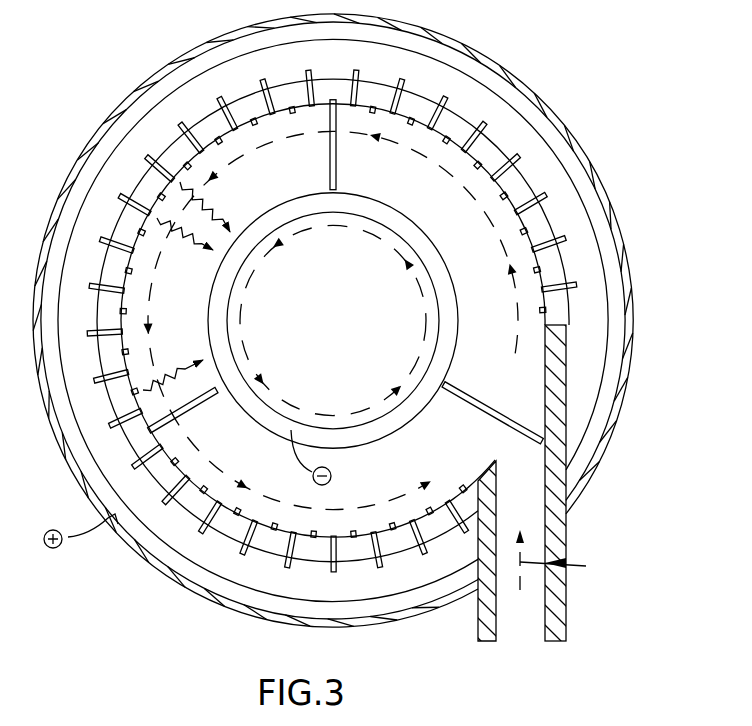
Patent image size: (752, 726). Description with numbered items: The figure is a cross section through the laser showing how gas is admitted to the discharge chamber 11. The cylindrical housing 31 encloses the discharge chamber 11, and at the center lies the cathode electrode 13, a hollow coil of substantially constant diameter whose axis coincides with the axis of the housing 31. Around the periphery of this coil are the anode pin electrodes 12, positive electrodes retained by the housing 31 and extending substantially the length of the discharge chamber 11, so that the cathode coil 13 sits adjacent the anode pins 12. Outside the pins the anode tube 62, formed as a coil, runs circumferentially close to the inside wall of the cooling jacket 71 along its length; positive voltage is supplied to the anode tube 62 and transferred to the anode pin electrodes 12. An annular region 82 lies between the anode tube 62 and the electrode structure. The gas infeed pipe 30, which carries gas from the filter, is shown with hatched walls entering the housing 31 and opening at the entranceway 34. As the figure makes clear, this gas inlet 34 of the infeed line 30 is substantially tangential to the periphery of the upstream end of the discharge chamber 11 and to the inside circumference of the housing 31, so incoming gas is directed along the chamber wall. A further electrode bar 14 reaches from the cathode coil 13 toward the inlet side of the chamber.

The cooling jacket 71 is at (408, 23).
The anode tube 62 is at (163, 93).
The annular passage 82 is at (547, 153).
The housing 31 is at (453, 133).
The discharge chamber 11 is at (125, 206).
The anode pin electrodes 12 is at (265, 84).
The cathode electrode 13 is at (439, 273).
The side electrode 14 is at (494, 410).
The entranceway 34 is at (517, 456).
The gas infeed pipe 30 is at (526, 630).